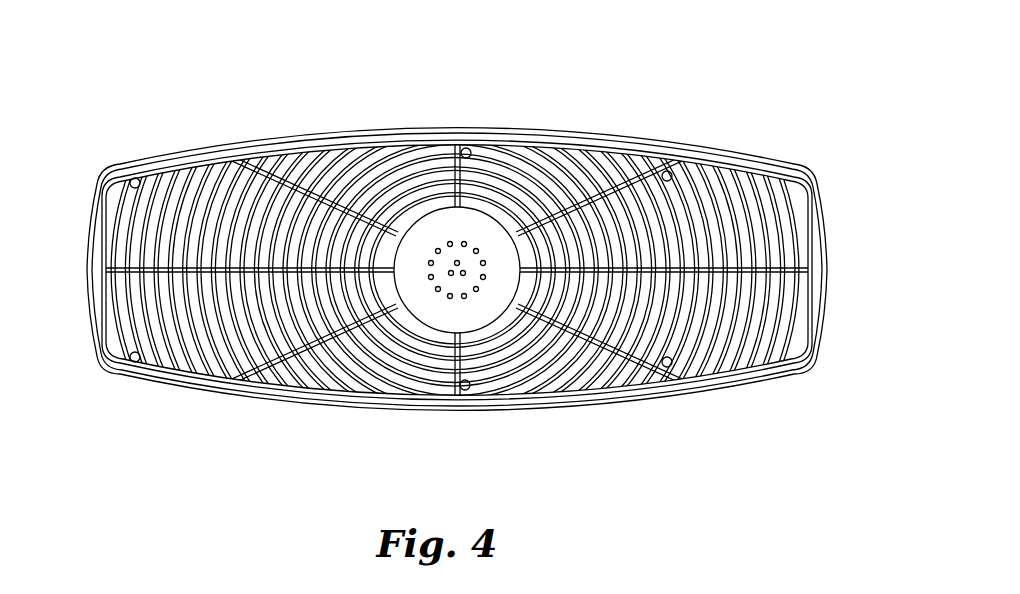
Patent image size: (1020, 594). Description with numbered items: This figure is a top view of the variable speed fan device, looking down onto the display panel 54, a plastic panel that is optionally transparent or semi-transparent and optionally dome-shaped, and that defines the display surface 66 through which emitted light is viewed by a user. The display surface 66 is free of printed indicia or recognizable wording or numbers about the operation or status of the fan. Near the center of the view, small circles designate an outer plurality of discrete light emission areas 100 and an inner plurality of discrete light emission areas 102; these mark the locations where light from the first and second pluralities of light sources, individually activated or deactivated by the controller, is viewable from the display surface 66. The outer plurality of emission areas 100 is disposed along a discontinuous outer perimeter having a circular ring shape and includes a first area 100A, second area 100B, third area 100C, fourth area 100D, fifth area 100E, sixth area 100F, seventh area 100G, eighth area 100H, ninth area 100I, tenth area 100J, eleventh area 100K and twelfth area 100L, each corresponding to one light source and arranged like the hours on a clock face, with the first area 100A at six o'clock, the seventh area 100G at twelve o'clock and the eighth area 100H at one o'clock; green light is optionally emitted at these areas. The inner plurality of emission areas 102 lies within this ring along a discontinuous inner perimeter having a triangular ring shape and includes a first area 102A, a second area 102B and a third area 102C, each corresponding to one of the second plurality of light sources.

The display panel 54 is at (510, 258).
The display surface 66 is at (400, 283).
The outer plurality of discrete light emission areas 100 is at (470, 238).
The first area 100A is at (465, 299).
The second area 100B is at (450, 299).
The third area 100C is at (437, 292).
The fourth area 100D is at (429, 279).
The fifth area 100E is at (429, 261).
The sixth area 100F is at (437, 248).
The seventh area 100G is at (449, 241).
The eighth area 100H is at (464, 241).
The ninth area 100I is at (477, 248).
The tenth area 100J is at (485, 262).
The eleventh area 100K is at (485, 279).
The twelfth area 100L is at (477, 291).
The inner plurality of discrete light emission areas 102 is at (450, 261).
The first area 102A is at (464, 276).
The second area 102B is at (451, 276).
The third area 102C is at (457, 260).